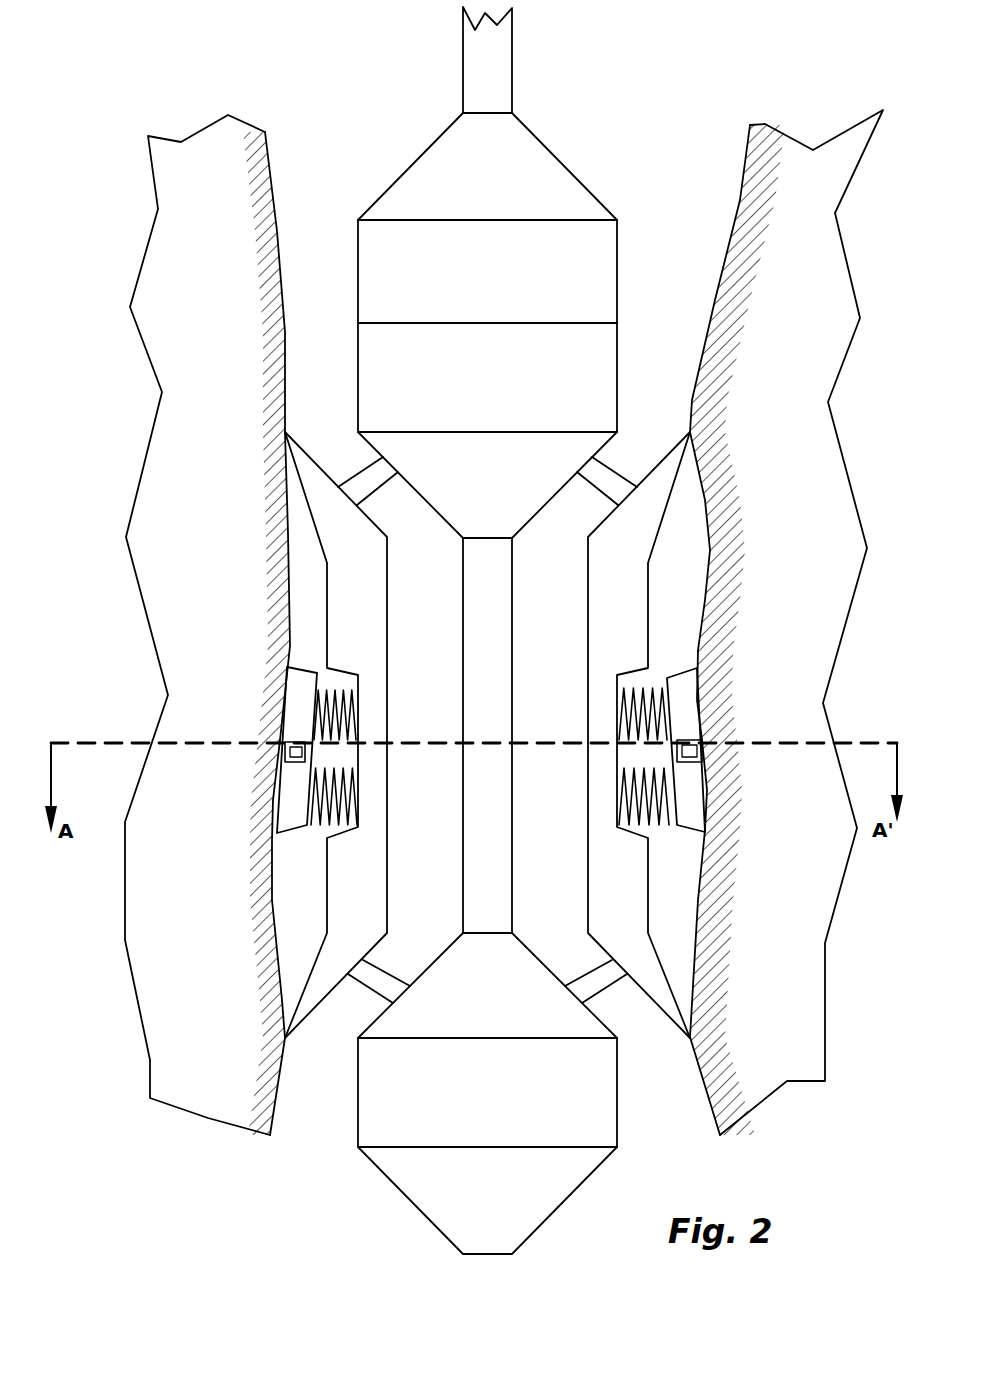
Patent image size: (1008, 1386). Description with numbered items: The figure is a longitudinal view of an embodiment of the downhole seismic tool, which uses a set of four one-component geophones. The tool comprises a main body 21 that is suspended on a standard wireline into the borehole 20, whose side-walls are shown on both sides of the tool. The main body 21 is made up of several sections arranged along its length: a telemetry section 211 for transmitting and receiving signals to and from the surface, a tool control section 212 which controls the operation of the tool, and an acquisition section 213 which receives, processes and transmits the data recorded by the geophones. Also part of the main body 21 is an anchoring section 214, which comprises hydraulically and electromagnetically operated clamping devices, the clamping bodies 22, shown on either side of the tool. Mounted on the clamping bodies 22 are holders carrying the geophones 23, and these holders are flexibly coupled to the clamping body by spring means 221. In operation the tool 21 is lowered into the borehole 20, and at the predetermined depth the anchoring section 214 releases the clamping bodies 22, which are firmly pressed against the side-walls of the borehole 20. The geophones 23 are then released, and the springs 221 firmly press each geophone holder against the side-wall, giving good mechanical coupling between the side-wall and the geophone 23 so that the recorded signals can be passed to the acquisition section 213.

The borehole 20 is at (265, 133).
The main body 21 is at (489, 630).
The telemetry section 211 is at (505, 288).
The tool control section 212 is at (505, 393).
The acquisition section 213 is at (505, 1111).
The anchoring section 214 is at (505, 503).
The clamping body 22 is at (345, 625).
The spring means 221 is at (358, 712).
The geophone 23 is at (274, 838).